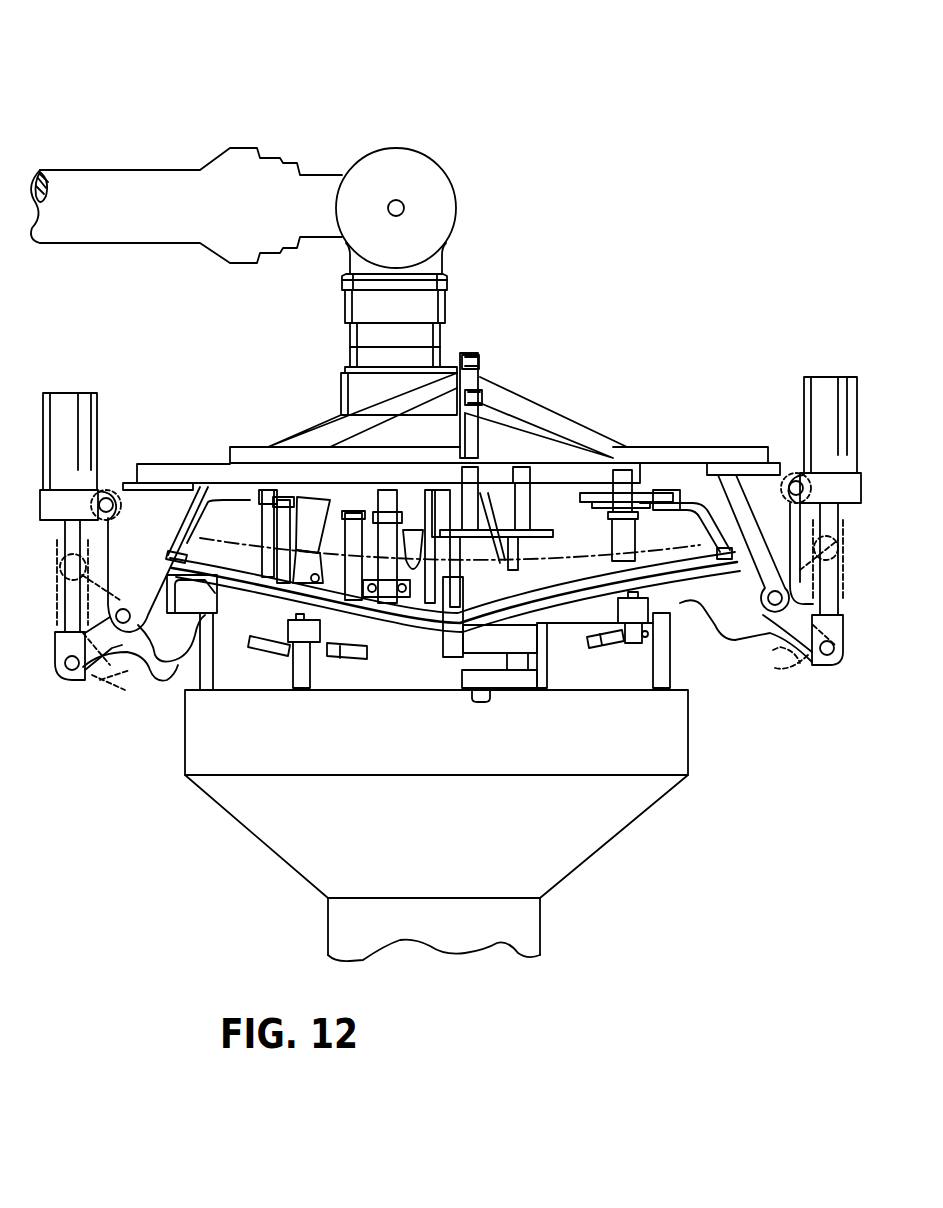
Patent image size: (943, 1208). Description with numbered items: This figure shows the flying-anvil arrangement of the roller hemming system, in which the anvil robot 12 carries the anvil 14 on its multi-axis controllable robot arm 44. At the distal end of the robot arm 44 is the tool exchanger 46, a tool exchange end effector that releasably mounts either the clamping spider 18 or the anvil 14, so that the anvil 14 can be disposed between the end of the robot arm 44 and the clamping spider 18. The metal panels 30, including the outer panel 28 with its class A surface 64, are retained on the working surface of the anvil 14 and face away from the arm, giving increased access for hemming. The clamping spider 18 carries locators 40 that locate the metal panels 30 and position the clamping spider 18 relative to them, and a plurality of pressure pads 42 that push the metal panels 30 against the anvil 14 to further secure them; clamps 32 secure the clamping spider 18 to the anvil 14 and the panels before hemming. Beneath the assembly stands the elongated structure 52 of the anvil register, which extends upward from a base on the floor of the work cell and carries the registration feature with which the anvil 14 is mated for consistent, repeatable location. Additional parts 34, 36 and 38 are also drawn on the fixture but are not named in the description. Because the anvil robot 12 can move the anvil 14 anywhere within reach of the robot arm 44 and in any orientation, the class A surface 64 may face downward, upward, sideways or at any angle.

The anvil robot 12 is at (428, 146).
The anvil 14 is at (687, 594).
The clamping spider 18 is at (532, 405).
The outer panel 28 is at (622, 632).
The metal panels 30 is at (592, 568).
The clamps 32 is at (730, 643).
The left link 34 is at (162, 662).
The clevis link 36 is at (108, 680).
The right pivot arm 38 is at (733, 604).
The locators 40 is at (424, 592).
The pressure pads 42 is at (187, 542).
The robot arm 44 is at (98, 175).
The tool exchanger 46 is at (443, 337).
The elongated structure 52 is at (542, 910).
The class A surface 64 is at (547, 572).